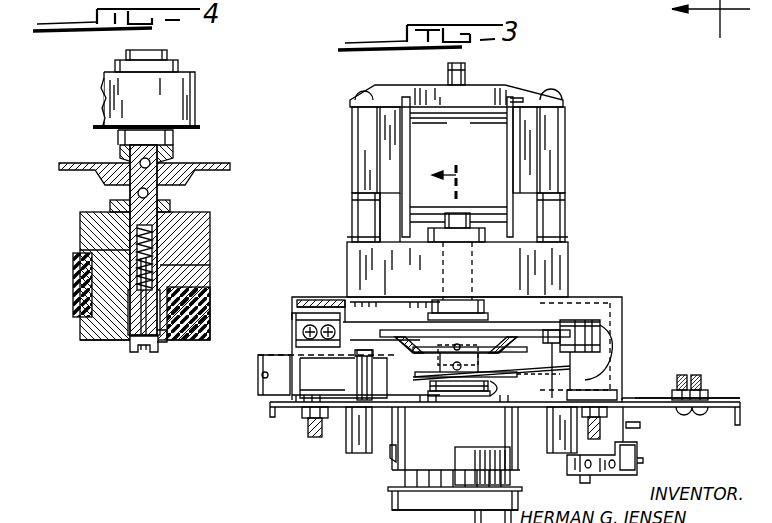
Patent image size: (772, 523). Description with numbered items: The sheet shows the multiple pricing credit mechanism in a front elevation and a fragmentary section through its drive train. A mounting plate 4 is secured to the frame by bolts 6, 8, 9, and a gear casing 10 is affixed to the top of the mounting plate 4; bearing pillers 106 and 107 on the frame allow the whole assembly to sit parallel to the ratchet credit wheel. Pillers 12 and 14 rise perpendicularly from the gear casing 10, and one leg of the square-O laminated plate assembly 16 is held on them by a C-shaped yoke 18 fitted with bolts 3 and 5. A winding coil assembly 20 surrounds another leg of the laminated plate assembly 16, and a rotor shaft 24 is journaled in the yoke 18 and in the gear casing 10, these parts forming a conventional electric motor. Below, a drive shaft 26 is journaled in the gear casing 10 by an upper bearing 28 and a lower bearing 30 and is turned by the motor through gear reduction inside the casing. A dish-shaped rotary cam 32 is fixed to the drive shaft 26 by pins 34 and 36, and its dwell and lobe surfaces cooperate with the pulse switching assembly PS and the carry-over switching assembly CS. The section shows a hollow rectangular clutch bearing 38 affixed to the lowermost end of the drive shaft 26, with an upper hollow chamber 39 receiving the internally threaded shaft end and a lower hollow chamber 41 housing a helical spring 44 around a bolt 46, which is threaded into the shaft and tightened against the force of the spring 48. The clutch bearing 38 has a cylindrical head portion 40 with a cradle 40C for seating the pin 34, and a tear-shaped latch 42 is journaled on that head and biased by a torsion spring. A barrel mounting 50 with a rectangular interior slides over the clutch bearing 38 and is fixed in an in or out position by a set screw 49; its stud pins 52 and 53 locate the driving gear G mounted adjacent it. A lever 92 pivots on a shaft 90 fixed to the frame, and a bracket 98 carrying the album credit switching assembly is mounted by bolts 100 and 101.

In FIG. 3, the bolt 3 is at (362, 88).
In FIG. 4, the mounting plate 4 is at (97, 126).
In FIG. 3, the mounting plate 4 is at (460, 167).
In FIG. 3, the bolt 5 is at (554, 88).
In FIG. 4, the bolt 6 is at (268, 193).
In FIG. 3, the bolt 8 is at (310, 427).
In FIG. 3, the bolt 9 is at (599, 432).
In FIG. 4, the gear casing 10 is at (185, 106).
In FIG. 3, the gear casing 10 is at (360, 262).
In FIG. 3, the piller 12 is at (365, 218).
In FIG. 3, the piller 14 is at (550, 218).
In FIG. 3, the laminated plate assembly 16 is at (373, 157).
In FIG. 3, the C-shaped yoke 18 is at (420, 92).
In FIG. 3, the winding coil assembly 20 is at (515, 162).
In FIG. 3, the rotor shaft 24 is at (463, 77).
In FIG. 4, the drive shaft 26 is at (152, 55).
In FIG. 3, the drive shaft 26 is at (458, 218).
In FIG. 4, the upper bearing 28 is at (178, 66).
In FIG. 3, the upper bearing 28 is at (442, 235).
In FIG. 4, the lower bearing 30 is at (170, 141).
In FIG. 3, the lower bearing 30 is at (462, 306).
In FIG. 4, the rotary cam 32 is at (226, 168).
In FIG. 3, the rotary cam 32 is at (532, 336).
In FIG. 4, the pin 34 is at (150, 193).
In FIG. 3, the pin 34 is at (420, 373).
In FIG. 4, the pin 36 is at (152, 162).
In FIG. 3, the pin 36 is at (470, 338).
In FIG. 4, the clutch bearing 38 is at (93, 248).
In FIG. 3, the clutch bearing 38 is at (457, 387).
In FIG. 4, the upper hollow chamber 39 is at (205, 246).
In FIG. 4, the cylindrical head portion 40 is at (82, 226).
In FIG. 3, the cylindrical head portion 40 is at (500, 372).
In FIG. 3, the cradle 40C is at (495, 358).
In FIG. 4, the lower hollow chamber 41 is at (118, 335).
In FIG. 4, the tear-shaped latch 42 is at (112, 202).
In FIG. 3, the tear-shaped latch 42 is at (572, 383).
In FIG. 4, the helical spring 44 is at (172, 203).
In FIG. 3, the helical spring 44 is at (487, 388).
In FIG. 4, the bolt 46 is at (144, 356).
In FIG. 4, the spring 48 is at (162, 342).
In FIG. 3, the set screw 49 is at (389, 459).
In FIG. 4, the barrel mounting 50 is at (195, 265).
In FIG. 3, the barrel mounting 50 is at (515, 445).
In FIG. 4, the stud pin 52 is at (75, 293).
In FIG. 4, the stud pin 53 is at (210, 292).
In FIG. 3, the shaft 90 is at (362, 378).
In FIG. 3, the lever 92 is at (297, 395).
In FIG. 3, the bracket 98 is at (645, 398).
In FIG. 3, the bolt 100 is at (700, 380).
In FIG. 3, the bolt 101 is at (682, 375).
In FIG. 3, the bearing piller 106 is at (358, 433).
In FIG. 3, the bearing piller 107 is at (557, 425).
In FIG. 4, the driving gear G is at (84, 341).
In FIG. 3, the driving gear G is at (508, 497).
In FIG. 3, the pulse switching assembly PS is at (322, 317).
In FIG. 3, the carry-over switching assembly CS is at (585, 319).